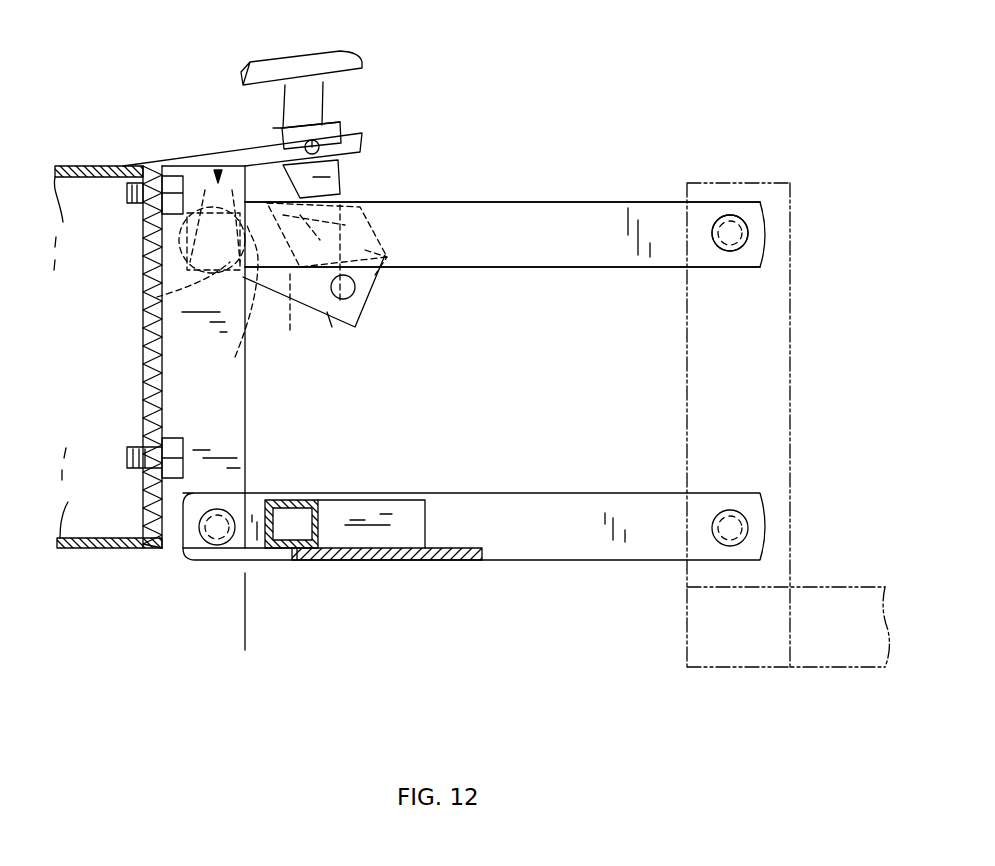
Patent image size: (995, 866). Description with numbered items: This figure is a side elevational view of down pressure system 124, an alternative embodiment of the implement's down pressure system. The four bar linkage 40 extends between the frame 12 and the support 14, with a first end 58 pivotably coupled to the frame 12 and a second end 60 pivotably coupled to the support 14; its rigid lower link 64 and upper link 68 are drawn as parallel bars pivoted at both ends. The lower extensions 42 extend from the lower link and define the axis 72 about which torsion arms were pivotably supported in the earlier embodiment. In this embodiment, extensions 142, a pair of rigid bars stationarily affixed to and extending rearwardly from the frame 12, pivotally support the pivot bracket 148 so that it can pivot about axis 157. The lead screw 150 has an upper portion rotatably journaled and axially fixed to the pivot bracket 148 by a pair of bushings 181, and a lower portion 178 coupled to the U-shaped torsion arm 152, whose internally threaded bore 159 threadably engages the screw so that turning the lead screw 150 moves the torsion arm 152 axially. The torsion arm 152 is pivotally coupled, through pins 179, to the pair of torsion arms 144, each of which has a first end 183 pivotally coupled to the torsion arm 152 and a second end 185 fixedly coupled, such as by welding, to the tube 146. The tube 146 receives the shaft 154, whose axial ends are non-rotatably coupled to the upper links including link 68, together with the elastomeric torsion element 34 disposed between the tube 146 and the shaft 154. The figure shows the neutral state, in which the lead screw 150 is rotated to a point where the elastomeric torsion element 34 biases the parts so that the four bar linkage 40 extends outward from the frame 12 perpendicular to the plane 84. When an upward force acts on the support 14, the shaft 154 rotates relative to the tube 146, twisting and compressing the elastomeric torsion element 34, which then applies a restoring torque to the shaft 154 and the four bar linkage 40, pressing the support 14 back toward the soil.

The frame 12 is at (88, 166).
The support 14 is at (793, 307).
The elastomeric torsion element 34 is at (157, 285).
The four bar linkage 40 is at (330, 97).
The lower extensions 42 is at (367, 563).
The first end 58 is at (213, 153).
The second end 60 is at (732, 198).
The lower link 64 is at (563, 548).
The upper link 68 is at (450, 217).
The axis 72 is at (420, 563).
The plane 84 is at (245, 627).
The down pressure system 124 is at (615, 60).
The extensions 142 is at (187, 153).
The torsion arms 144 is at (293, 300).
The tube 146 is at (240, 340).
The pivot bracket 148 is at (350, 128).
The lead screw 150 is at (352, 53).
The torsion arm 152 is at (373, 297).
The shaft 154 is at (177, 235).
The axis 157 is at (325, 113).
The internally threaded bore 159 is at (347, 197).
The lower portion 178 is at (387, 275).
The pins 179 is at (343, 287).
The first end 183 is at (332, 327).
The bushings 181 is at (273, 128).
The second end 185 is at (157, 297).